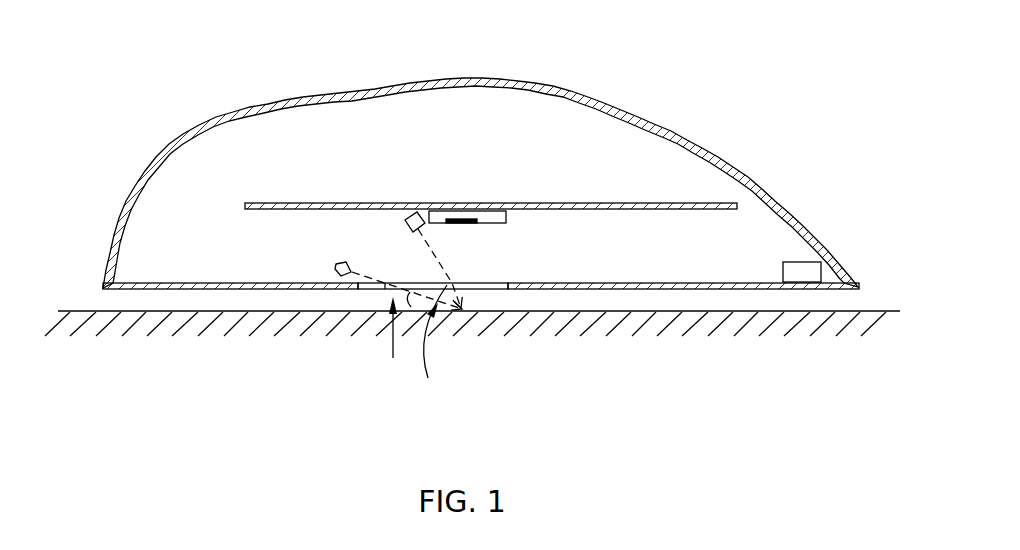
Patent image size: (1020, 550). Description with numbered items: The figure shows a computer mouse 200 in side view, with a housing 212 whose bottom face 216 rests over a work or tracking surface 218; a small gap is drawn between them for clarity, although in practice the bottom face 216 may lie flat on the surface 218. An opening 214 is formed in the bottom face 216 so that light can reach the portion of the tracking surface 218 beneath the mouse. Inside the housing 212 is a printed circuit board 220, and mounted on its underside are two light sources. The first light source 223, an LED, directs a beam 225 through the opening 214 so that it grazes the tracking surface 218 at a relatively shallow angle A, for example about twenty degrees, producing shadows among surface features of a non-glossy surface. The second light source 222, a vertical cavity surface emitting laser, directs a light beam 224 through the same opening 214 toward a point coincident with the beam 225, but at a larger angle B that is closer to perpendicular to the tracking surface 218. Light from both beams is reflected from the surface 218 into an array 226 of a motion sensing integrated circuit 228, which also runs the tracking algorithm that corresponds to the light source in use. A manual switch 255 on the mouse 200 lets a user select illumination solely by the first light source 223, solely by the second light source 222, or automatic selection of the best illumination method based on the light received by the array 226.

The computer mouse 200 is at (139, 112).
The housing 212 is at (687, 135).
The opening 214 is at (516, 288).
The bottom face 216 is at (848, 294).
The tracking surface 218 is at (712, 310).
The printed circuit board 220 is at (265, 203).
The second light source 222 is at (404, 226).
The first light source 223 is at (333, 268).
The light beam 224 is at (411, 258).
The beam 225 is at (384, 285).
The array 226 is at (455, 218).
The motion sensing integrated circuit 228 is at (508, 220).
The manual switch 255 is at (803, 262).
The angle A is at (393, 337).
The angle B is at (435, 338).